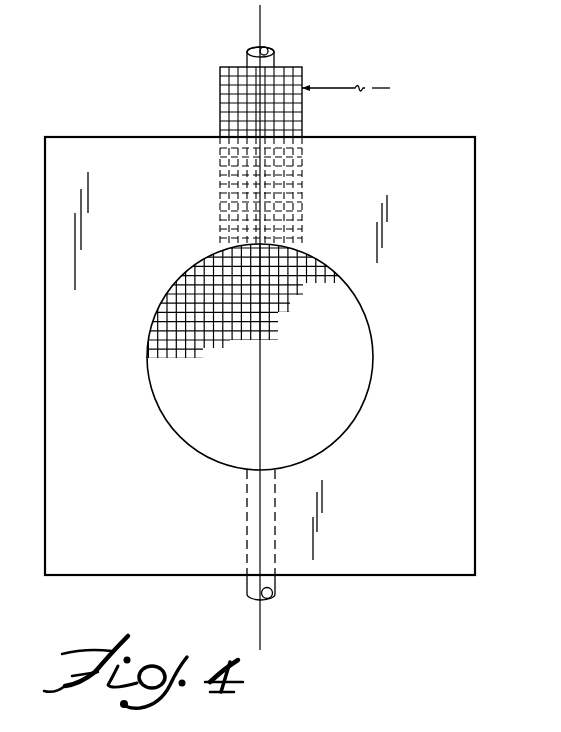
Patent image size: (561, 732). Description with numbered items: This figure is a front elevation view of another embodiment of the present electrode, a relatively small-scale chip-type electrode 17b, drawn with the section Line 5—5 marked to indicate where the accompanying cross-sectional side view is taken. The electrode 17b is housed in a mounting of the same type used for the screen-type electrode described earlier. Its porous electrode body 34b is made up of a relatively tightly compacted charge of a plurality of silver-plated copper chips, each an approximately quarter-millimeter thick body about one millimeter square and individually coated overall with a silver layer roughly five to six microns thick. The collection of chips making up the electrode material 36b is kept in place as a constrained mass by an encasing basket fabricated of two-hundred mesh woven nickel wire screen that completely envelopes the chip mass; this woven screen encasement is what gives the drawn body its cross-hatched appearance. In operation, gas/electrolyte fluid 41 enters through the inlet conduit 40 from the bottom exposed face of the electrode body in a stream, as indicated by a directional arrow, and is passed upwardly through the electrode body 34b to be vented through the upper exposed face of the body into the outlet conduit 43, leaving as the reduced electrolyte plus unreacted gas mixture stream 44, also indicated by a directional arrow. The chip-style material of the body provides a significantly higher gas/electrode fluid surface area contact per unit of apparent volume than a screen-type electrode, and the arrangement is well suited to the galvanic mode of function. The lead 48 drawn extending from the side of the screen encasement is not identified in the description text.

The chip-type electrode 17b is at (111, 125).
The outlet conduit 43 is at (246, 55).
The reduced electrolyte plus unreacted gas mixture stream 44 is at (222, 35).
The lead wire 48 is at (338, 88).
The porous electrode body 34b is at (190, 430).
The electrode material 36b is at (335, 413).
The gas/electrolyte fluid 41 is at (232, 622).
The inlet conduit 40 is at (268, 585).
The Line 5— 5 is at (193, 33).